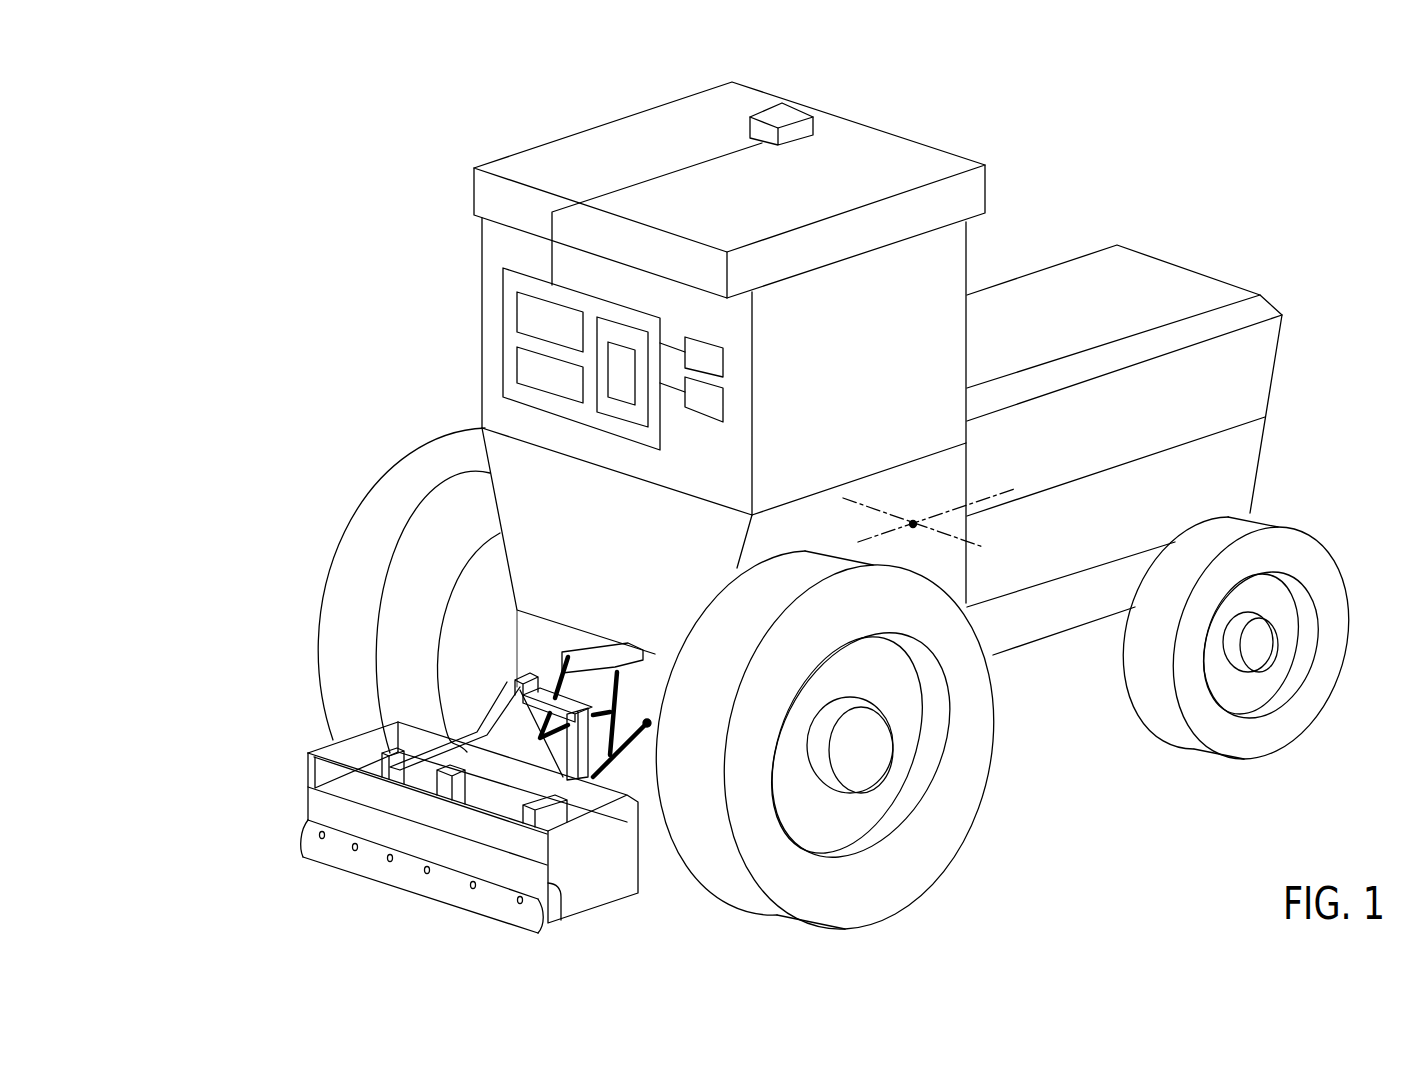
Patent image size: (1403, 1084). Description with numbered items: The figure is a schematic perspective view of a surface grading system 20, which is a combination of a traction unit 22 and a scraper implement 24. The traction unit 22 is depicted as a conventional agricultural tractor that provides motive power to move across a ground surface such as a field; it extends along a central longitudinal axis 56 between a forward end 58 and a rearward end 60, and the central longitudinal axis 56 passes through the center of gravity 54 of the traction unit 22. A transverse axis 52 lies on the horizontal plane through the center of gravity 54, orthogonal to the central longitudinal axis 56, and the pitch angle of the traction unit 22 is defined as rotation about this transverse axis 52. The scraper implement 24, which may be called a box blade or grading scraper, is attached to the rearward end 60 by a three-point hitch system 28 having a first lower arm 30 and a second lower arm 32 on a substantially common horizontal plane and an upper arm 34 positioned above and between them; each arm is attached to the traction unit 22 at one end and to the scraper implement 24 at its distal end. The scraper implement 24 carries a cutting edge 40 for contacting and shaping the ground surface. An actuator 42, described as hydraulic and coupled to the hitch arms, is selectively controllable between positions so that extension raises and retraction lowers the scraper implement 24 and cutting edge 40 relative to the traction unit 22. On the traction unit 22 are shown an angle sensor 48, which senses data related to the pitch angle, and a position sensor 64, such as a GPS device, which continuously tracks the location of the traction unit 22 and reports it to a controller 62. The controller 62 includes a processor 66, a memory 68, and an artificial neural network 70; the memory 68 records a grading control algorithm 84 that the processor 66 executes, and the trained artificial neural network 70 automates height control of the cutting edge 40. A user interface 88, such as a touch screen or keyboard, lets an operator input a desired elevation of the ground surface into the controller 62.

The surface grading system 20 is at (300, 78).
The traction unit 22 is at (1015, 278).
The scraper implement 24 is at (558, 915).
The three-point hitch system 28 is at (546, 642).
The first lower arm 30 is at (655, 735).
The second lower arm 32 is at (641, 703).
The upper arm 34 is at (584, 668).
The cutting edge 40 is at (433, 898).
The actuator 42 is at (640, 668).
The angle sensor 48 is at (708, 355).
The transverse axis 52 is at (978, 547).
The center of gravity 54 is at (913, 524).
The central longitudinal axis 56 is at (987, 500).
The forward end 58 is at (1271, 393).
The rearward end 60 is at (528, 488).
The controller 62 is at (513, 277).
The position sensor 64 is at (785, 149).
The processor 66 is at (548, 315).
The memory 68 is at (612, 330).
The artificial neural network 70 is at (540, 370).
The grading control algorithm 84 is at (625, 358).
The user interface 88 is at (712, 403).